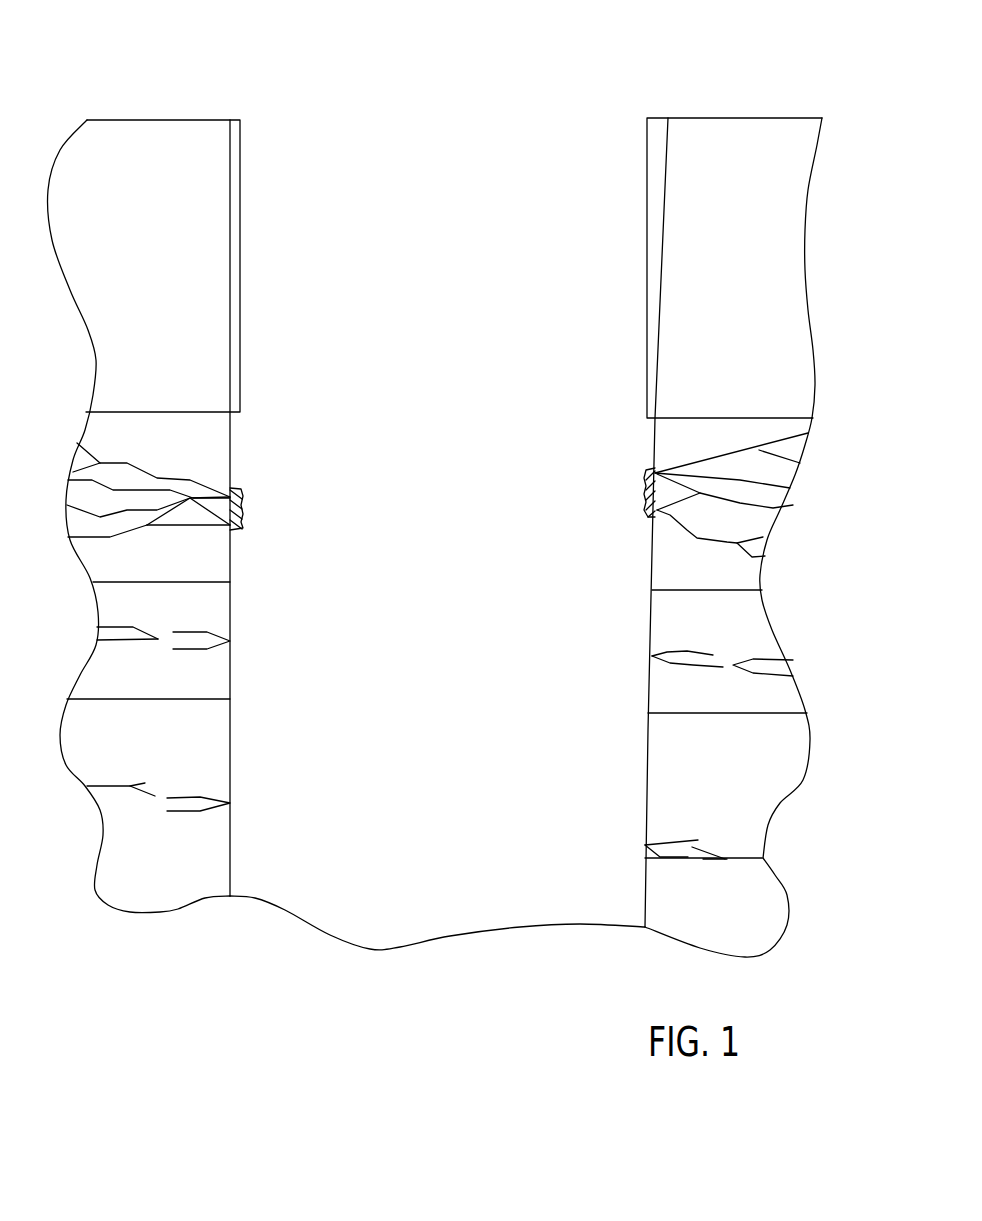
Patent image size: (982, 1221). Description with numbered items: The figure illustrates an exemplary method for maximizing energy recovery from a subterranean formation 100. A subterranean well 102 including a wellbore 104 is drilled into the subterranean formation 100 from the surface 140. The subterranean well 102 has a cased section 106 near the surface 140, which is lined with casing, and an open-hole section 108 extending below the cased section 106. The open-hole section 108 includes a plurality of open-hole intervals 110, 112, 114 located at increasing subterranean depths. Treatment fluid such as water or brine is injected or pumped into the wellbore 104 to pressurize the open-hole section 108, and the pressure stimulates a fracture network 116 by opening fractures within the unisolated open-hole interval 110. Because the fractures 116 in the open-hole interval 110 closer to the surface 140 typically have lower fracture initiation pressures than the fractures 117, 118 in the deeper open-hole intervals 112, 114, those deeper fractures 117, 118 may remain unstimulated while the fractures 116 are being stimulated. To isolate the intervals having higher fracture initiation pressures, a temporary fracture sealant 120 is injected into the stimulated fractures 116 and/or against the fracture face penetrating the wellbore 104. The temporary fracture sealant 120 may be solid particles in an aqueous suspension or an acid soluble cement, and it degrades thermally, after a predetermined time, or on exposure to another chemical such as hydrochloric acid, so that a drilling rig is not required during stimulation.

The subterranean formation 100 is at (183, 912).
The subterranean well 102 is at (210, 463).
The wellbore 104 is at (686, 495).
The cased section 106 is at (260, 217).
The open-hole section 108 is at (330, 476).
The open-hole interval 110 is at (777, 482).
The open-hole interval 112 is at (763, 627).
The open-hole interval 114 is at (757, 804).
The fracture network 116 is at (788, 442).
The fractures 117 is at (669, 665).
The fractures 118 is at (660, 858).
The temporary fracture sealant 120 is at (643, 470).
The surface 140 is at (728, 118).